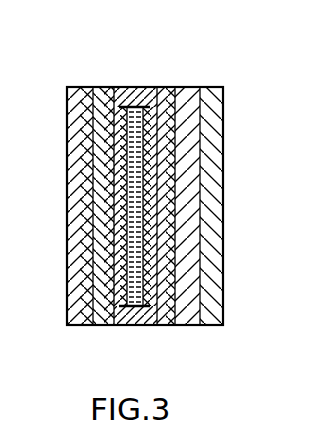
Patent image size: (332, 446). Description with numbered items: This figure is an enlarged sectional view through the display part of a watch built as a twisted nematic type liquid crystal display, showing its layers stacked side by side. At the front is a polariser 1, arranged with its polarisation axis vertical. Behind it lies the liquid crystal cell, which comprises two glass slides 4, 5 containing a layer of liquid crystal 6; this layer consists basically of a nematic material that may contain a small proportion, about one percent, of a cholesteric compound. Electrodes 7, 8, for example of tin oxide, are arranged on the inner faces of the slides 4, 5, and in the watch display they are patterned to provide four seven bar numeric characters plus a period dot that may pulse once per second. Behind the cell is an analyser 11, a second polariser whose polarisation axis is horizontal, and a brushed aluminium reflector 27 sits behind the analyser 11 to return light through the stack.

The polariser 1 is at (67, 199).
The glass slide 4 is at (96, 86).
The glass slide 5 is at (161, 86).
The layer of liquid crystal 6 is at (135, 86).
The electrode 7 is at (122, 304).
The electrode 8 is at (148, 308).
The analyser 11 is at (185, 86).
The brushed aluminium reflector 27 is at (223, 199).